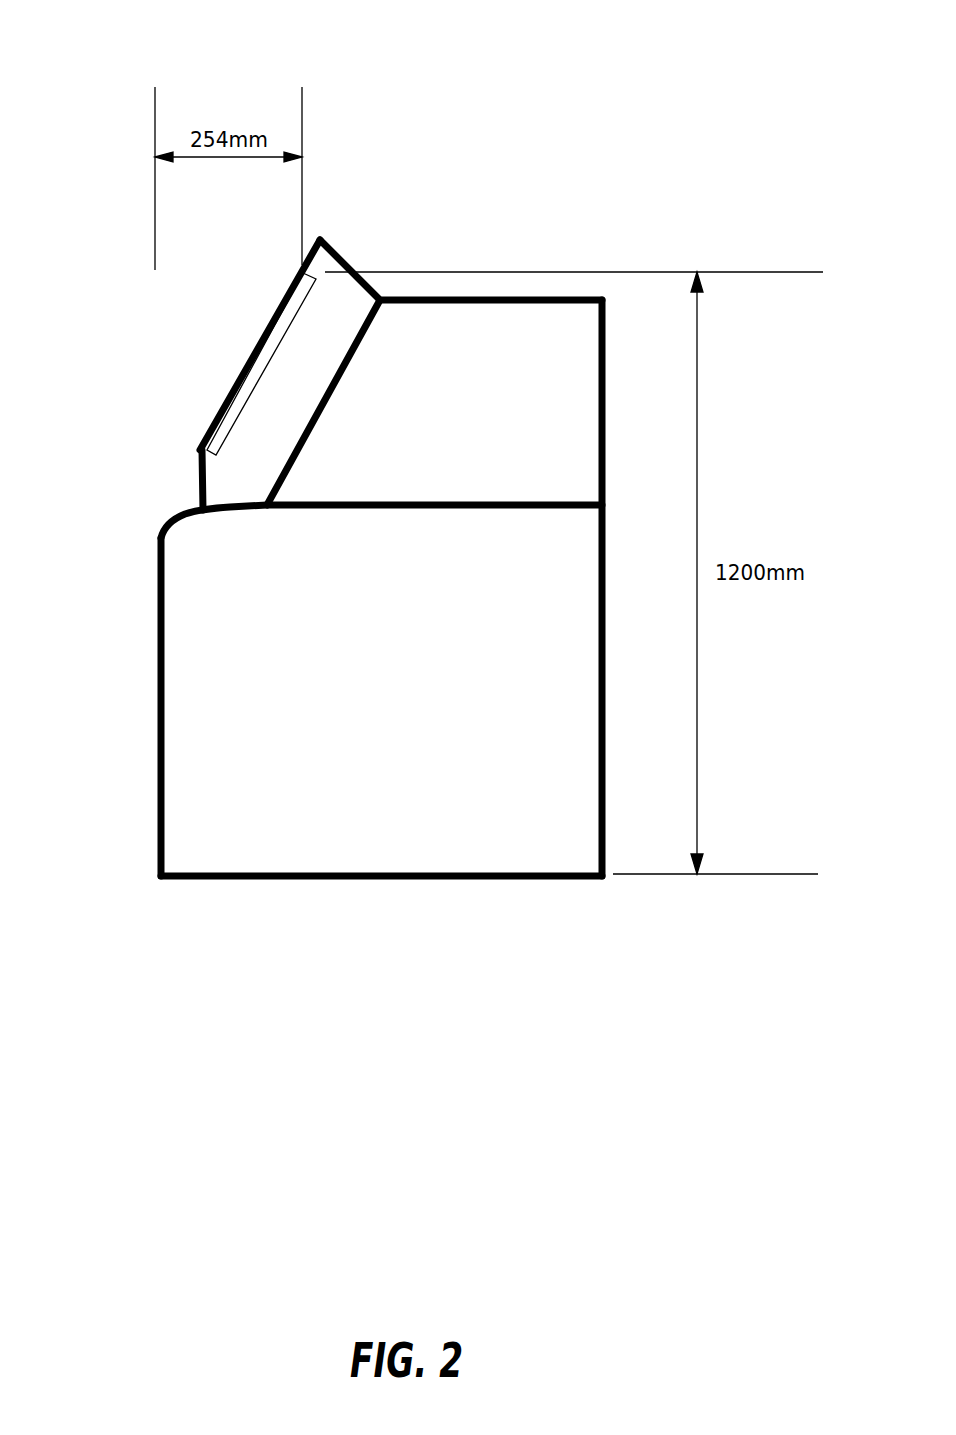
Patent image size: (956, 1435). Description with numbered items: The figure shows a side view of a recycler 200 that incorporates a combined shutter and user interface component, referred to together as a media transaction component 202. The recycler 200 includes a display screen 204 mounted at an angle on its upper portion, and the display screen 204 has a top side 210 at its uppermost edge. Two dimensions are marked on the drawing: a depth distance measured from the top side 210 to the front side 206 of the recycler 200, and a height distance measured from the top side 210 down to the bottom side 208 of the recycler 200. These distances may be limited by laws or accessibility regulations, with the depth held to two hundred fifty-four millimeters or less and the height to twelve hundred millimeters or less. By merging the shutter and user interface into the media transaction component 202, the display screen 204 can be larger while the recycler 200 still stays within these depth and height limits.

The recycler 200 is at (723, 33).
The media transaction component 202 is at (187, 518).
The display screen 204 is at (250, 360).
The front side 206 is at (158, 723).
The bottom side 208 is at (403, 872).
The top side 210 is at (312, 256).